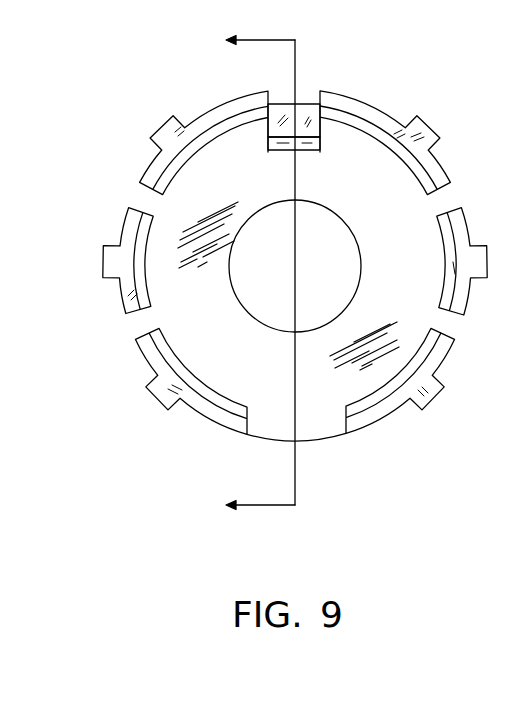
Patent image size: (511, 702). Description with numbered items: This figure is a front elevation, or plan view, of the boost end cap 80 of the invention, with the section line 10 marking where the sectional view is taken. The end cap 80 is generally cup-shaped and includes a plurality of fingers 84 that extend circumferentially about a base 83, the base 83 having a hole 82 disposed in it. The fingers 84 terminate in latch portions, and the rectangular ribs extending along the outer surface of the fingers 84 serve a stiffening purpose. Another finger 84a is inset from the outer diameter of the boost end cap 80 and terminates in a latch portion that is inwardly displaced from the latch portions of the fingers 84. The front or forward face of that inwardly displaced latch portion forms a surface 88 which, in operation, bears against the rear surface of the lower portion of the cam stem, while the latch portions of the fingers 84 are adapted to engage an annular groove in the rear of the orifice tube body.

The section line 10- 10 is at (246, 273).
The end boost cap 80 is at (367, 60).
The hole 82 is at (338, 253).
The base 83 is at (400, 286).
The fingers 84 is at (467, 238).
The finger 84a is at (313, 150).
The surface 88 is at (267, 121).